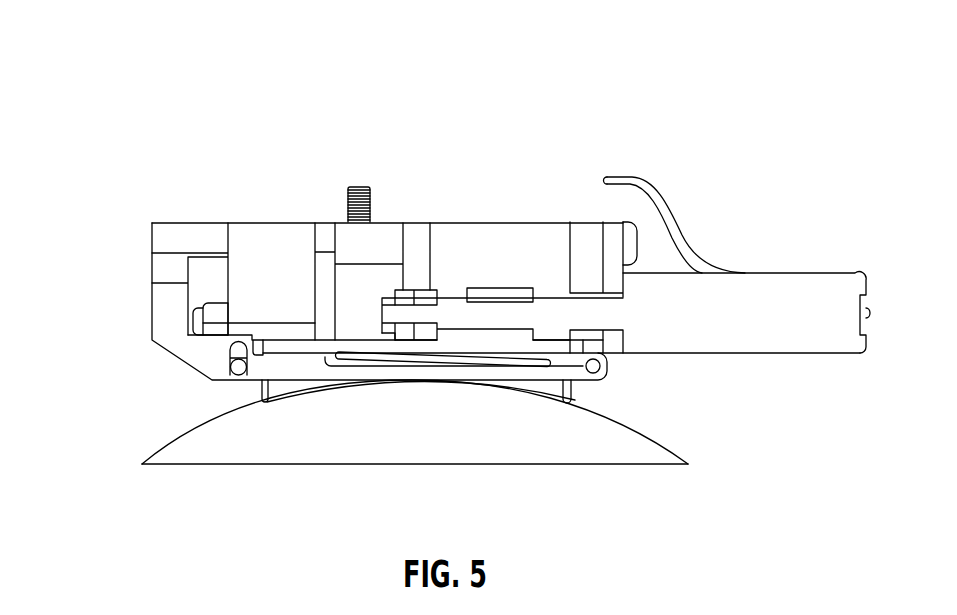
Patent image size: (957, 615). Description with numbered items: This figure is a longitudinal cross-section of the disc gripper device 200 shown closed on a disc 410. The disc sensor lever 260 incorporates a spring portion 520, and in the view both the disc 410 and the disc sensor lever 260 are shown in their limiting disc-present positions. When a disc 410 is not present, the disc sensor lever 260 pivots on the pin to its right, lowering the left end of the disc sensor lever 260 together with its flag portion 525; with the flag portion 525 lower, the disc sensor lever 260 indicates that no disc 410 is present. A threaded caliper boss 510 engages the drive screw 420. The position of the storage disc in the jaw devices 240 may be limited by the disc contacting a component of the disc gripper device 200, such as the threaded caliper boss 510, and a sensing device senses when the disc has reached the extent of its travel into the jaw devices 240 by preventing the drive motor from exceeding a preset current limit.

The disc gripper device 200 is at (460, 34).
The flag portion 525 is at (172, 238).
The drive screw 420 is at (452, 313).
The threaded caliper boss 510 is at (511, 290).
The spring portion 520 is at (497, 356).
The jaw devices 240 is at (257, 392).
The disc sensor lever 260 is at (512, 373).
The disc 410 is at (283, 443).